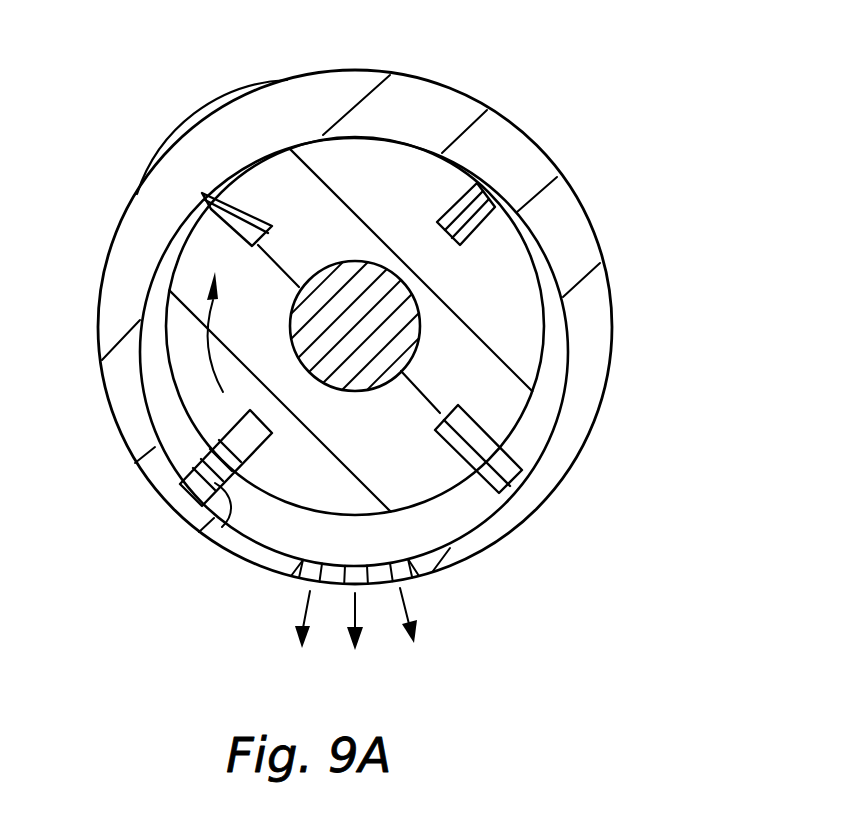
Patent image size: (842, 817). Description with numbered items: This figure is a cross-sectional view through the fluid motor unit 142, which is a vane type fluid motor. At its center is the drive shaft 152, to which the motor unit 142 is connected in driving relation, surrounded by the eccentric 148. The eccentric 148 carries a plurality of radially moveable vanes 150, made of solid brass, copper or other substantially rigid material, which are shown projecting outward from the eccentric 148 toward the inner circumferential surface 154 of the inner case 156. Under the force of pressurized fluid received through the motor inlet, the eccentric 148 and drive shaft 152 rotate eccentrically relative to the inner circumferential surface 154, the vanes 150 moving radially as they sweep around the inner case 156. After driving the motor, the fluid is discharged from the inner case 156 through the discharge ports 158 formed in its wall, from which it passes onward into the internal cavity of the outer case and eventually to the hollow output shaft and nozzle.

The fluid motor unit 142 is at (664, 510).
The eccentric 148 is at (532, 377).
The radially moveable vanes 150 is at (438, 220).
The drive shaft 152 is at (422, 320).
The inner circumferential surface 154 is at (565, 380).
The inner case 156 is at (107, 395).
The discharge ports 158 is at (308, 588).